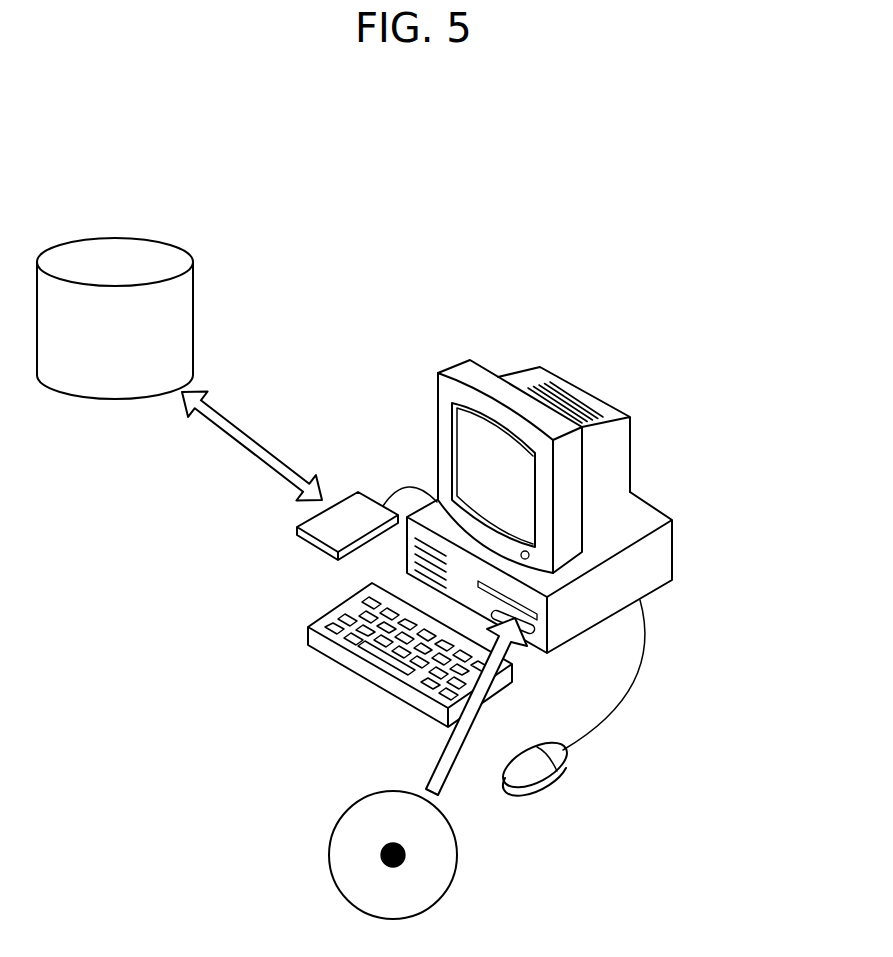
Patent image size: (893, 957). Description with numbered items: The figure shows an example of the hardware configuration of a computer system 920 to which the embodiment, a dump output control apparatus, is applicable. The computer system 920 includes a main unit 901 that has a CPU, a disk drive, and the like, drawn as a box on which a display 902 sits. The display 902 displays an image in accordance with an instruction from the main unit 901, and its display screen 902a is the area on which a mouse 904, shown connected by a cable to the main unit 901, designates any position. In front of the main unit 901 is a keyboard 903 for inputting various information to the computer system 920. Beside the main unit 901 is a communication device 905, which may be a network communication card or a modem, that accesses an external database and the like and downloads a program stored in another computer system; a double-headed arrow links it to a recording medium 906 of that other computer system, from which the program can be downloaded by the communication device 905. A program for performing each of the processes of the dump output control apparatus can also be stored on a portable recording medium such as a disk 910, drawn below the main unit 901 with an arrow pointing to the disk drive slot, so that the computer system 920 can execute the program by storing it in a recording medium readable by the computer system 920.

The computer system 920 is at (625, 365).
The main unit 901 is at (672, 551).
The display 902 is at (633, 468).
The display screen 902a is at (458, 457).
The keyboard 903 is at (360, 676).
The mouse 904 is at (568, 778).
The communication device 905 is at (307, 546).
The recording medium 906 is at (193, 303).
The disk 910 is at (457, 875).